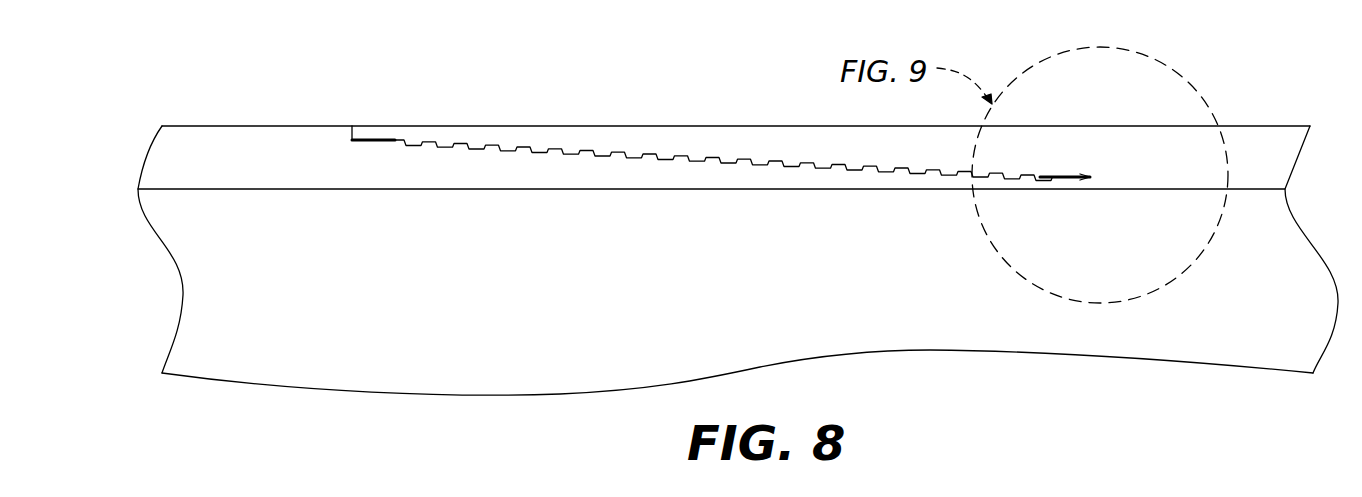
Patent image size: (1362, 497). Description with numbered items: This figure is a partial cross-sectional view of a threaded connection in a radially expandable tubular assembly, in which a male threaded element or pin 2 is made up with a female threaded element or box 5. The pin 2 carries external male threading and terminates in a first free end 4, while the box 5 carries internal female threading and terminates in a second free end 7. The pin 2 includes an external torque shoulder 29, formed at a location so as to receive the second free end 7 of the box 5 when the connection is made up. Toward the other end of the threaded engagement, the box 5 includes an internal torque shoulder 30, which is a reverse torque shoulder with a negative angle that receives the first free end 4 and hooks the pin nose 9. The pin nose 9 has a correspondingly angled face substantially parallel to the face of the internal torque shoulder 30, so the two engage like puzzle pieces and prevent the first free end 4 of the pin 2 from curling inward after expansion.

The male threaded element 2 is at (252, 168).
The first free end 4 is at (1057, 184).
The female threaded element 5 is at (1280, 143).
The second free end 7 is at (387, 132).
The pin nose 9 is at (1093, 180).
The external torque shoulder 29 is at (354, 131).
The internal torque shoulder 30 is at (1082, 186).